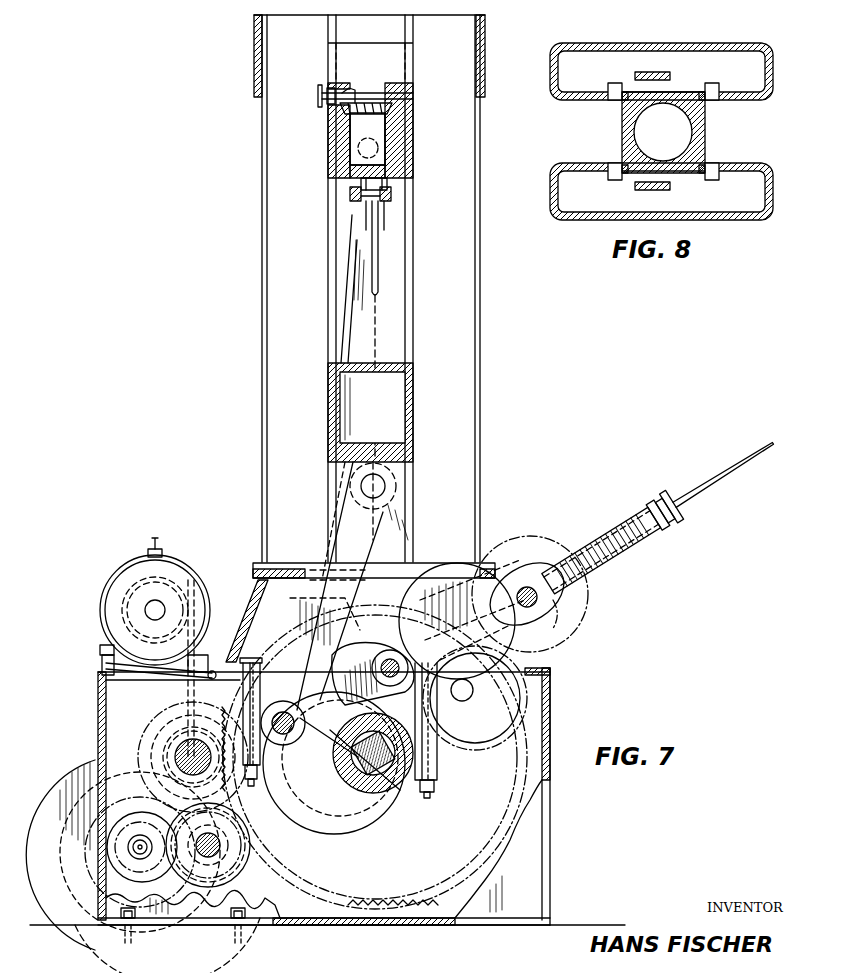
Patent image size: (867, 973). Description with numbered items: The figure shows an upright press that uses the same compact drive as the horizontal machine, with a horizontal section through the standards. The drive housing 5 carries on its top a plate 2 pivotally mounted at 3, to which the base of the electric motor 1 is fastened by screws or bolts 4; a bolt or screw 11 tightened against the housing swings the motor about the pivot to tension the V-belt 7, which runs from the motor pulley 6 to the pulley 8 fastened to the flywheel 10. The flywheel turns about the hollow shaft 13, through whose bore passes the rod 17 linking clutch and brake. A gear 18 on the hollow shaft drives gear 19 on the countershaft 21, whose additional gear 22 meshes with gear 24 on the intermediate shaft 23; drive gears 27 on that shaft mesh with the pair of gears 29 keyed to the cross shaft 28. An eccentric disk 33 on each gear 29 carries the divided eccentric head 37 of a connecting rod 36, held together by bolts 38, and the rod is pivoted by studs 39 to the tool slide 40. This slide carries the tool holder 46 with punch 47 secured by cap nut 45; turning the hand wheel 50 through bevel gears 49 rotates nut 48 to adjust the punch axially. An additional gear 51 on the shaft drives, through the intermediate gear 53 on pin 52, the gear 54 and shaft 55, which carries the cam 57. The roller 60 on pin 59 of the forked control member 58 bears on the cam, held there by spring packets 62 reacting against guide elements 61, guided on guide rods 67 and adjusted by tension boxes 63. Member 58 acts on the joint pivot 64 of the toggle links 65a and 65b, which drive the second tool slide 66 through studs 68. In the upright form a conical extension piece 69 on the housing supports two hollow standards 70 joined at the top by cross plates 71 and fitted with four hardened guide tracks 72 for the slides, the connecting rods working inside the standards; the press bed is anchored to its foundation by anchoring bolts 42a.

In FIG. 7, the electric motor 1 is at (118, 582).
In FIG. 7, the plate 2 is at (100, 654).
In FIG. 7, the pivot 3 is at (213, 671).
In FIG. 7, the screws or bolts 4 is at (200, 656).
In FIG. 7, the drive housing 5 is at (551, 864).
In FIG. 7, the pulley 6 is at (140, 603).
In FIG. 7, the V-belt 7 is at (97, 760).
In FIG. 7, the pulley 8 is at (92, 866).
In FIG. 7, the flywheel 10 is at (70, 786).
In FIG. 7, the bolt or screw 11 is at (104, 669).
In FIG. 7, the hollow shaft 13 is at (146, 858).
In FIG. 7, the rod 17 is at (136, 832).
In FIG. 7, the gear 18 is at (125, 870).
In FIG. 7, the gear 19 is at (238, 868).
In FIG. 7, the countershaft 21 is at (208, 862).
In FIG. 7, the additional gear 22 is at (238, 838).
In FIG. 7, the intermediate shaft 23 is at (195, 745).
In FIG. 7, the gear 24 is at (150, 712).
In FIG. 7, the drive gears 27 is at (176, 742).
In FIG. 7, the cross shaft 28 is at (390, 793).
In FIG. 7, the gears 29 is at (492, 855).
In FIG. 7, the eccentric disk 33 is at (303, 783).
In FIG. 7, the connecting rod 36 is at (370, 334).
In FIG. 8, the connecting rod 36 is at (672, 74).
In FIG. 7, the divided eccentric head 37 is at (330, 820).
In FIG. 7, the bolts 38 is at (430, 792).
In FIG. 7, the studs 39 is at (375, 155).
In FIG. 7, the tool slide 40 is at (330, 158).
In FIG. 7, the anchoring bolts or screws 42a is at (120, 937).
In FIG. 7, the cap nut 45 is at (392, 197).
In FIG. 7, the tool holder 46 is at (360, 182).
In FIG. 7, the punch 47 is at (377, 284).
In FIG. 7, the nut 48 is at (397, 134).
In FIG. 7, the bevel gears 49 is at (366, 103).
In FIG. 7, the hand wheel 50 is at (322, 97).
In FIG. 7, the additional gear 51 is at (368, 805).
In FIG. 7, the pin 52 is at (466, 700).
In FIG. 7, the intermediate gear 53 is at (505, 738).
In FIG. 7, the gear 54 is at (567, 640).
In FIG. 7, the shaft 55 is at (532, 608).
In FIG. 7, the cam 57 is at (456, 582).
In FIG. 7, the forked control member 58 is at (676, 506).
In FIG. 7, the pin 59 is at (388, 658).
In FIG. 7, the roller 60 is at (372, 664).
In FIG. 7, the guide elements 61 is at (565, 606).
In FIG. 7, the spring packets 62 is at (632, 540).
In FIG. 7, the tension boxes 63 is at (690, 515).
In FIG. 7, the joint pivot 64 is at (283, 712).
In FIG. 7, the toggle link 65a is at (322, 790).
In FIG. 7, the toggle link 65b is at (300, 596).
In FIG. 7, the tool slide 66 is at (412, 413).
In FIG. 8, the tool slide 66 is at (663, 132).
In FIG. 7, the guide rods 67 is at (745, 478).
In FIG. 7, the studs 68 is at (386, 487).
In FIG. 7, the conical extension piece 69 is at (256, 591).
In FIG. 7, the hollow standards 70 is at (268, 284).
In FIG. 8, the hollow standards 70 is at (551, 75).
In FIG. 7, the cross plates 71 is at (255, 50).
In FIG. 8, the hardened guide tracks 72 is at (622, 166).